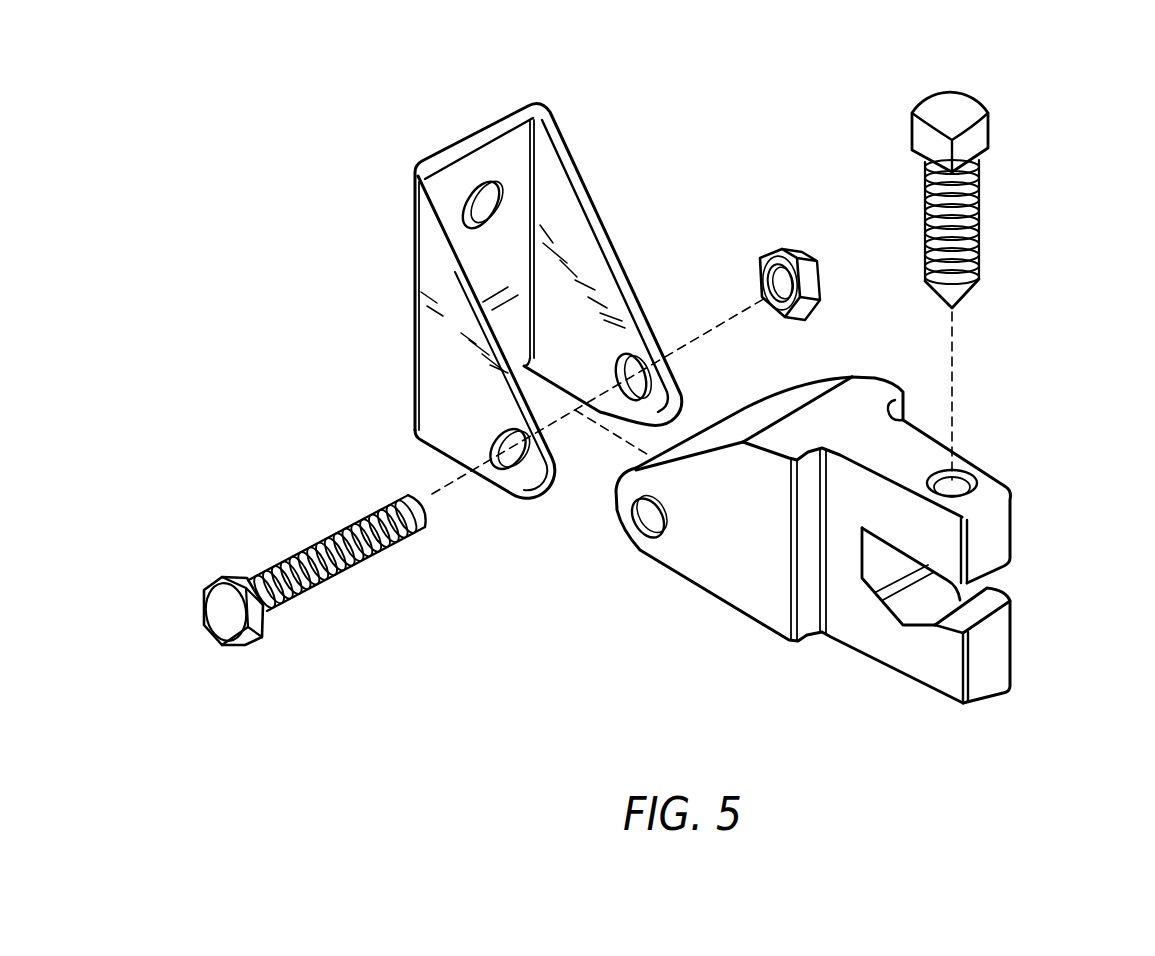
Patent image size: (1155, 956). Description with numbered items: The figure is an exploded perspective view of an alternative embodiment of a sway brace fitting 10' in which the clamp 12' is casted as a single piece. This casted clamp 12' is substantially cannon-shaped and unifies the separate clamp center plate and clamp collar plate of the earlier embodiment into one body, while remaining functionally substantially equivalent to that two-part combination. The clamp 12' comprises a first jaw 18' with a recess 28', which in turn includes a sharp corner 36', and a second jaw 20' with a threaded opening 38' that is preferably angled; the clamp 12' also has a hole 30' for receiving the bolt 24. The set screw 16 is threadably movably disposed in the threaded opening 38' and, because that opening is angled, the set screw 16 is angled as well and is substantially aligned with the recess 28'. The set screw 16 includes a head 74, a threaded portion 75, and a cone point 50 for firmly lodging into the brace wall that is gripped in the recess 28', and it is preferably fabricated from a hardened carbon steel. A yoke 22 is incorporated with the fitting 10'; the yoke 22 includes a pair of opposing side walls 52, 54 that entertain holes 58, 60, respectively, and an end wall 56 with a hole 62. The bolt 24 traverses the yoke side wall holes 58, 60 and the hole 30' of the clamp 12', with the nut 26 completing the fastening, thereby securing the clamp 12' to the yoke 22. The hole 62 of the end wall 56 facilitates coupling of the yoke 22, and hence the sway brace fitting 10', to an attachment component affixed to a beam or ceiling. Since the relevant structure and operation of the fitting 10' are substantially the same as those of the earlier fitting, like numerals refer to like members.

The sway brace fitting 10' is at (734, 601).
The clamp 12' is at (832, 564).
The set screw 16 is at (1018, 208).
The first jaw 18' is at (919, 668).
The second jaw 20' is at (959, 480).
The yoke 22 is at (364, 310).
The bolt 24 is at (304, 594).
The nut 26 is at (788, 248).
The recess 28' is at (904, 640).
The hole 30' is at (620, 556).
The sharp corner 36' is at (980, 567).
The threaded opening 38' is at (991, 467).
The cone point 50 is at (958, 293).
The side wall 52 is at (437, 372).
The side wall 54 is at (558, 196).
The end wall 56 is at (506, 153).
The hole 58 is at (498, 467).
The hole 60 is at (628, 356).
The hole 62 is at (476, 184).
The head 74 is at (958, 107).
The threaded portion 75 is at (924, 246).